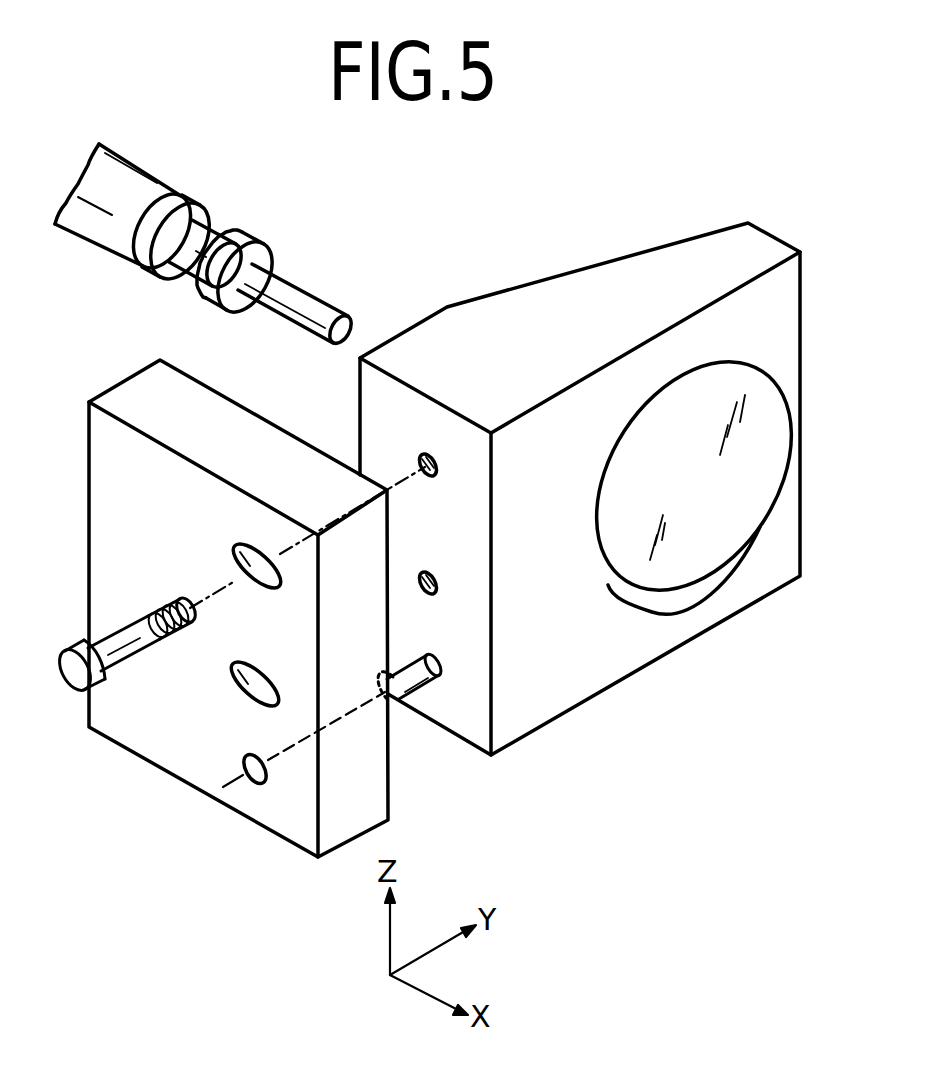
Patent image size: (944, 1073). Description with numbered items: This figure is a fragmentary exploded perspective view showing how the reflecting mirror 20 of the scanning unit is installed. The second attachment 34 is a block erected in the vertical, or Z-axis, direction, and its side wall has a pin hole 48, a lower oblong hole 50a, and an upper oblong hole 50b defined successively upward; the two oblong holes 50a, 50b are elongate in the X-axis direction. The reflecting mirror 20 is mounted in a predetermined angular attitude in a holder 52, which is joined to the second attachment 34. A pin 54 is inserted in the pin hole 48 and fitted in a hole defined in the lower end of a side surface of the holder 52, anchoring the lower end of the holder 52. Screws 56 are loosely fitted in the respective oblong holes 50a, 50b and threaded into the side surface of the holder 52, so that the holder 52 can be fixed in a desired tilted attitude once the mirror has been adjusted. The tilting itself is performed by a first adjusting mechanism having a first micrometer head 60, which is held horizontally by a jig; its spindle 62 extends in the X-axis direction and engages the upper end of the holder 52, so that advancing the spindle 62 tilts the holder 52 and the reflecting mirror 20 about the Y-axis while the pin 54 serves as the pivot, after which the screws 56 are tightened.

The reflecting mirror 20 is at (742, 473).
The second attachment 34 is at (100, 486).
The pin hole 48 is at (255, 782).
The oblong hole 50a is at (233, 690).
The oblong hole 50b is at (233, 558).
The holder 52 is at (778, 298).
The pin 54 is at (417, 672).
The screw 56 is at (142, 648).
The first micrometer head 60 is at (123, 186).
The spindle 62 is at (283, 293).